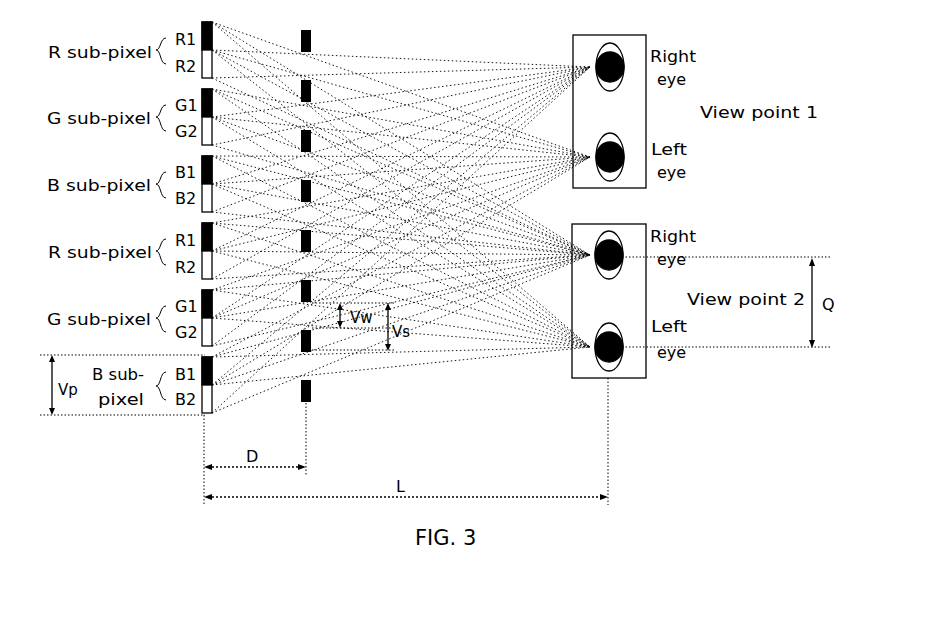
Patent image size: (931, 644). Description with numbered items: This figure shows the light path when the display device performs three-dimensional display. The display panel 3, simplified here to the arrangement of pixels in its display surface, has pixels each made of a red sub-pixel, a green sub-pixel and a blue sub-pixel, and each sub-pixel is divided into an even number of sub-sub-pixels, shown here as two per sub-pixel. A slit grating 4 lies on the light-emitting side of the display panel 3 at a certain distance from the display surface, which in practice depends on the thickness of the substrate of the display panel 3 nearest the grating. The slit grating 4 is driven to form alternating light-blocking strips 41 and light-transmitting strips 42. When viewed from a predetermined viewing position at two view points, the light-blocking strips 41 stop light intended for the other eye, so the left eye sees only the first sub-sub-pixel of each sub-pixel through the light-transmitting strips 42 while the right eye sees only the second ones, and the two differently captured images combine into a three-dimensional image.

The display panel 3 is at (214, 400).
The slit grating 4 is at (348, 234).
The light-blocking strips 41 is at (311, 393).
The light-transmitting strips 42 is at (313, 373).